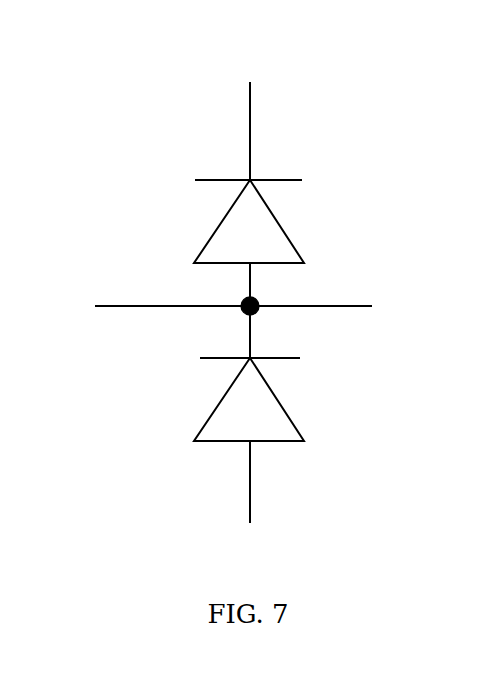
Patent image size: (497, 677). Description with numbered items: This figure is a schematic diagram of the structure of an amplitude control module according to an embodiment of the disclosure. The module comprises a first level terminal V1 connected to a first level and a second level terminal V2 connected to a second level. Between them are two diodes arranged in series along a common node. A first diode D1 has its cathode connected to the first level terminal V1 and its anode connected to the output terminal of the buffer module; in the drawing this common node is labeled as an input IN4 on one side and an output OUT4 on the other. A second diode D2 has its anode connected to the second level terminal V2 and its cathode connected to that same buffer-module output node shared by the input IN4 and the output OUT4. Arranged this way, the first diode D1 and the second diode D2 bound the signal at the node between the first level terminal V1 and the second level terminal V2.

The first level terminal V1 is at (244, 116).
The second level terminal V2 is at (247, 501).
The first diode D1 is at (282, 221).
The second diode D2 is at (285, 399).
The input terminal IN4 is at (74, 306).
The output terminal OUT4 is at (402, 306).